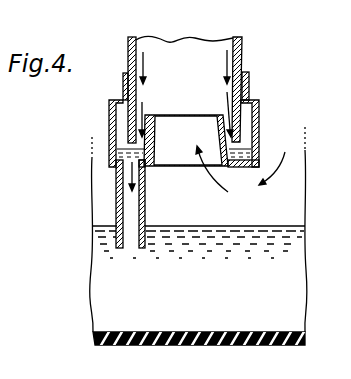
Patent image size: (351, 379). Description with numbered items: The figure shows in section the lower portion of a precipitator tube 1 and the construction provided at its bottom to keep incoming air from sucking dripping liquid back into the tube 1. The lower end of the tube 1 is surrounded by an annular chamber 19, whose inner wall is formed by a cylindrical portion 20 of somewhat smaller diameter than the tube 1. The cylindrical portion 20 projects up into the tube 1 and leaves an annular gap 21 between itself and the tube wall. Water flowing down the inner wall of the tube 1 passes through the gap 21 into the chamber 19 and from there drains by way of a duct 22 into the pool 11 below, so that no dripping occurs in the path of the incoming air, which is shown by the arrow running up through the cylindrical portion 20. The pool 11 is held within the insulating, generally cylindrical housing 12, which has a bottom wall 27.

The tube 1 is at (244, 42).
The annular chamber 19 is at (250, 117).
The cylindrical portion 20 is at (186, 153).
The annular gap 21 is at (134, 137).
The duct 22 is at (128, 204).
The housing 12 is at (306, 188).
The pool 11 is at (286, 242).
The bottom wall 27 is at (122, 330).